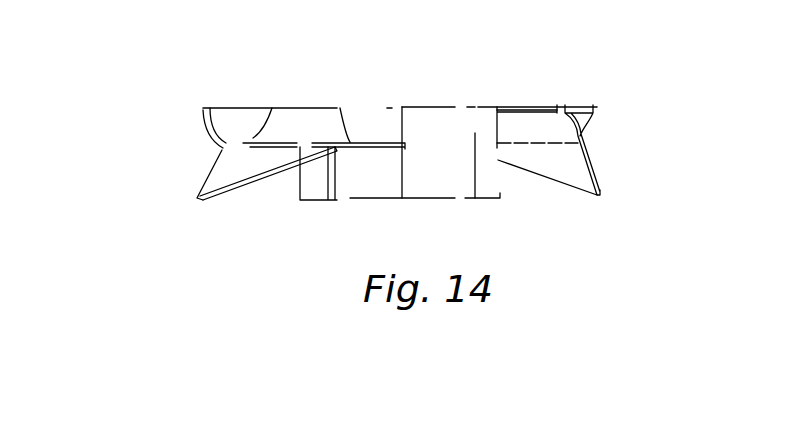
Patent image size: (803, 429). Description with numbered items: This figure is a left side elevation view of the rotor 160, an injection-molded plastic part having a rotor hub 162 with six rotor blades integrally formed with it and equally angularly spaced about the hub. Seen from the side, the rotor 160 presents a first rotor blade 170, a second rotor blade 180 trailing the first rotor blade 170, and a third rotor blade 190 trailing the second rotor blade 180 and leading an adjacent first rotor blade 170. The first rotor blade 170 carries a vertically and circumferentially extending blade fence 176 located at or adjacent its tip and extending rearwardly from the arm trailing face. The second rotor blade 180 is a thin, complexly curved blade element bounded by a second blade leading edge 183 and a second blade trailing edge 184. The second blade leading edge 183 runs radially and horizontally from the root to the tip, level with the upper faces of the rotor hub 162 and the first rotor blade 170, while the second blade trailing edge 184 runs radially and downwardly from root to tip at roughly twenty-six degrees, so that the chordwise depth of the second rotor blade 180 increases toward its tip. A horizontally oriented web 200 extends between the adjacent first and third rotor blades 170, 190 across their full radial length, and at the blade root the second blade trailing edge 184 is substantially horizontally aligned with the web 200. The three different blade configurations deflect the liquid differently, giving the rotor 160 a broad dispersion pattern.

The rotor 160 is at (124, 56).
The rotor hub 162 is at (352, 204).
The first rotor blade 170 is at (442, 219).
The blade fence 176 is at (440, 128).
The second rotor blade 180 is at (188, 176).
The second blade leading edge 183 is at (533, 105).
The second blade trailing edge 184 is at (228, 190).
The third rotor blade 190 is at (194, 132).
The web 200 is at (253, 138).